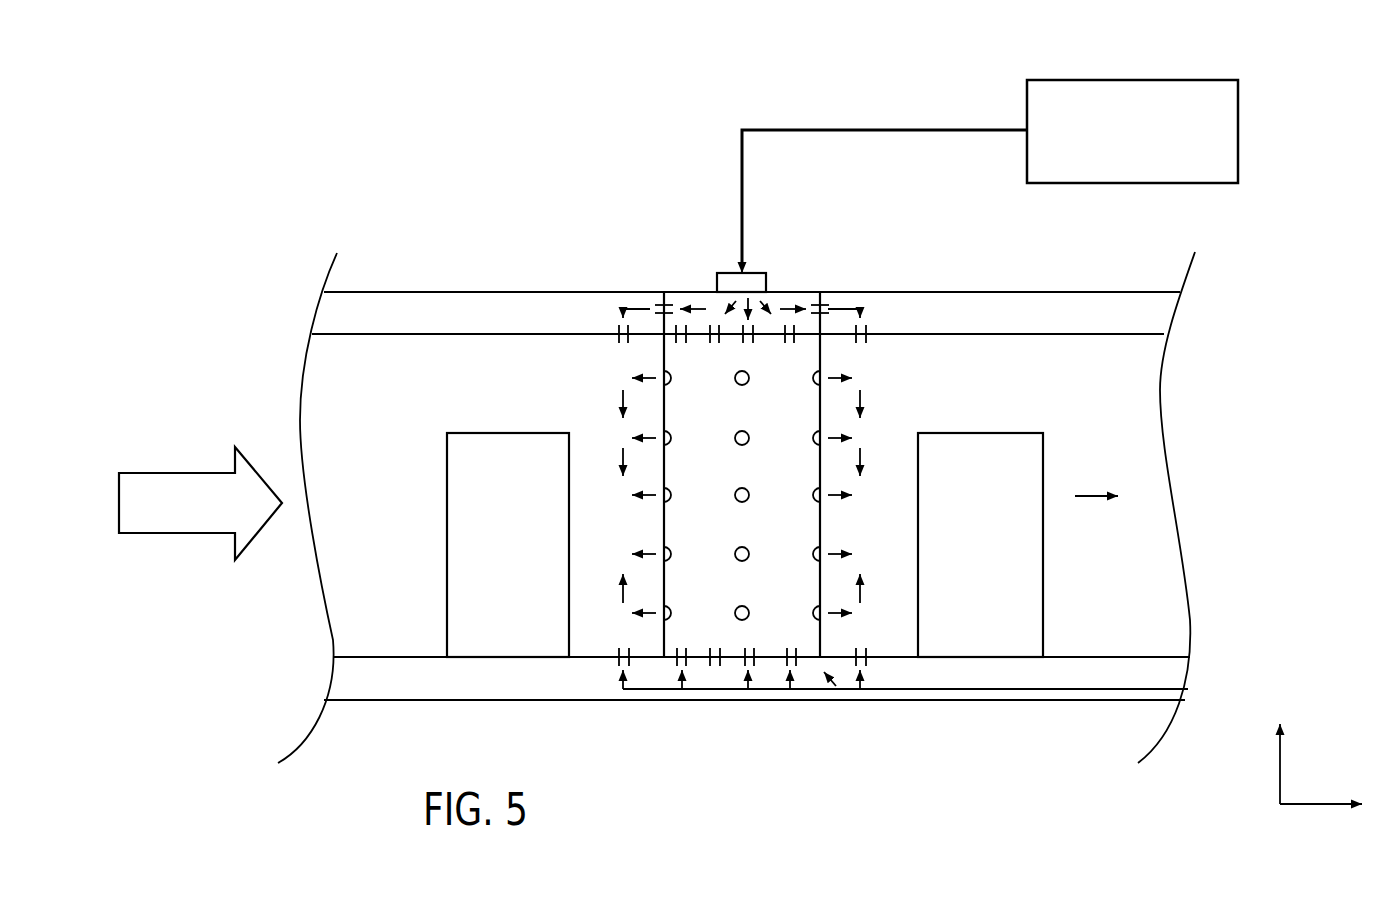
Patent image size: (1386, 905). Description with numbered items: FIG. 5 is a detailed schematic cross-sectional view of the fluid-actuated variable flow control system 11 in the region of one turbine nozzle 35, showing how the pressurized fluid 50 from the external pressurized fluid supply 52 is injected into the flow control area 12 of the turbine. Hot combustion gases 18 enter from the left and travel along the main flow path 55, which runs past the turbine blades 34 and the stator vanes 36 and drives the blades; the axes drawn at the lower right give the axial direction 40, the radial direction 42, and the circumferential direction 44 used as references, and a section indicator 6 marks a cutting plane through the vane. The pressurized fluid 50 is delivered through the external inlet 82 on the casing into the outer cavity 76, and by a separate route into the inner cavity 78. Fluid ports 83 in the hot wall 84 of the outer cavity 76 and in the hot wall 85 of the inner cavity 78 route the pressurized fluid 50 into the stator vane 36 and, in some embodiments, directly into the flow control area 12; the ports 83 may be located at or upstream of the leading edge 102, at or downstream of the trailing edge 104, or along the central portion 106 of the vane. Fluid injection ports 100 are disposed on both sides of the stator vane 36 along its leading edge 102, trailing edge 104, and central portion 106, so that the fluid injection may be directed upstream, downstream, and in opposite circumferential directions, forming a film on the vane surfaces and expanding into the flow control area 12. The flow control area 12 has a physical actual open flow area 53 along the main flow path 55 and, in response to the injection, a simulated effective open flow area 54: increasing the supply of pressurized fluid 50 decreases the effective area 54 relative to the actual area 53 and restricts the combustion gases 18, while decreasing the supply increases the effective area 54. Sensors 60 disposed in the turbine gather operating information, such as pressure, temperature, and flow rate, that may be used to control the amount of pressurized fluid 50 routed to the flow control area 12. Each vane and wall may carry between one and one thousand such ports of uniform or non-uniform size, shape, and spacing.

The section line 6- 6 is at (742, 105).
The fluid-actuated variable flow control system 11 is at (1292, 160).
The fluid-actuated variable flow control area 12 is at (648, 232).
The combustion gases 18 is at (176, 473).
The turbine blades 34 is at (496, 541).
The turbine nozzle 35 is at (662, 705).
The stator vanes 36 is at (765, 591).
The axial direction 40 is at (1298, 804).
The radial direction 42 is at (1280, 768).
The circumferential direction 44 is at (1308, 833).
The pressurized fluid 50 is at (885, 130).
The external pressurized fluid supply 52 is at (1133, 80).
The actual open flow area 53 is at (811, 670).
The effective open flow area 54 is at (826, 674).
The main flow path 55 is at (1092, 497).
The sensors 60 is at (1023, 690).
The outer cavity 76 is at (967, 306).
The inner cavity 78 is at (588, 676).
The external inlet 82 is at (757, 272).
The fluid ports 83 is at (868, 328).
The wall of the outer cavity 84 is at (1065, 328).
The wall of the inner cavity 85 is at (1115, 660).
The fluid injection ports 100 is at (750, 497).
The leading edge 102 is at (664, 527).
The trailing edge 104 is at (820, 527).
The central portion 106 is at (733, 406).